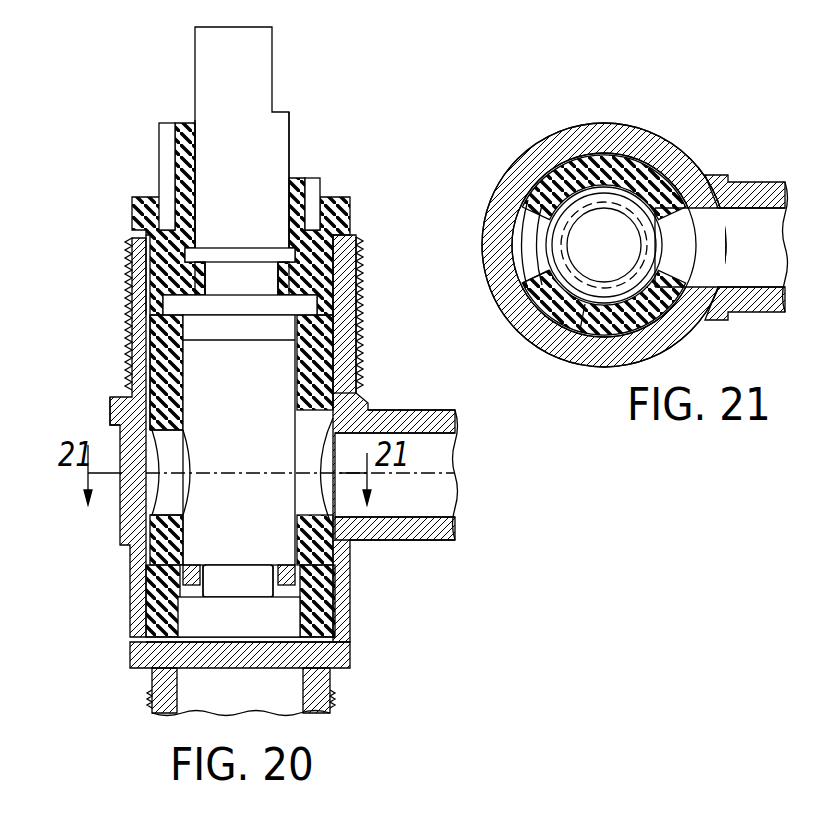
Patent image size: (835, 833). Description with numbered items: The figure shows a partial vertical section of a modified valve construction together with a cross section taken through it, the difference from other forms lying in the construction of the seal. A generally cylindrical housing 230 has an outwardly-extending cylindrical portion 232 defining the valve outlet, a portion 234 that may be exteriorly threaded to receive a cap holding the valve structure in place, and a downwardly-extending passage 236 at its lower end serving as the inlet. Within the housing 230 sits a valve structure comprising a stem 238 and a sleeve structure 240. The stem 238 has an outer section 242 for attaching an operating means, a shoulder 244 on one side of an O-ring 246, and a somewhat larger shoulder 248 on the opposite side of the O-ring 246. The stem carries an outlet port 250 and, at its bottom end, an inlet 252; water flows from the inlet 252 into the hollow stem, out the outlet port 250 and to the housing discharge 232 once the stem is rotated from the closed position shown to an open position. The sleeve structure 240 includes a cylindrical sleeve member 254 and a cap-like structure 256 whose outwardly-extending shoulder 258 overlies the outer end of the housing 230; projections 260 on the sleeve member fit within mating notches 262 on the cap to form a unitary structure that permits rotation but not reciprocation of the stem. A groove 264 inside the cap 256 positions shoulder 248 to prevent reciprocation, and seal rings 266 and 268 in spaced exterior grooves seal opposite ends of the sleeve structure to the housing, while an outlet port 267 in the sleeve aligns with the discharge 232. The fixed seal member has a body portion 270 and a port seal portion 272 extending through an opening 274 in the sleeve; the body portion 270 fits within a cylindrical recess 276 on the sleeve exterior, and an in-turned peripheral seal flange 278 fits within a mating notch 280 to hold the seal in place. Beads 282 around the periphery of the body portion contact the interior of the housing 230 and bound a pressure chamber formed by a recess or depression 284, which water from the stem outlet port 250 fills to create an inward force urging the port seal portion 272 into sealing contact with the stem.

In FIG. 20, the housing 230 is at (128, 650).
In FIG. 21, the housing 230 is at (590, 128).
In FIG. 20, the cylindrical portion 232 is at (440, 542).
In FIG. 21, the cylindrical portion 232 is at (775, 172).
In FIG. 20, the exteriorly threaded portion 234 is at (345, 300).
In FIG. 20, the downwardly-extending passage 236 is at (200, 700).
In FIG. 20, the stem 238 is at (283, 140).
In FIG. 20, the sleeve structure 240 is at (322, 565).
In FIG. 21, the sleeve structure 240 is at (628, 148).
In FIG. 20, the outer section 242 is at (270, 60).
In FIG. 20, the shoulder 244 is at (263, 230).
In FIG. 20, the O-ring 246 is at (196, 272).
In FIG. 20, the larger shoulder 248 is at (320, 280).
In FIG. 20, the stem outlet port 250 is at (185, 462).
In FIG. 21, the stem outlet port 250 is at (658, 252).
In FIG. 20, the inlet 252 is at (223, 600).
In FIG. 21, the inlet 252 is at (640, 240).
In FIG. 20, the sleeve member 254 is at (352, 390).
In FIG. 20, the cap-like structure 256 is at (343, 240).
In FIG. 20, the outwardly-extending shoulder 258 is at (138, 207).
In FIG. 20, the projections 260 is at (345, 330).
In FIG. 20, the mating notches 262 is at (150, 325).
In FIG. 20, the groove 264 is at (152, 300).
In FIG. 20, the seal ring 266 is at (142, 262).
In FIG. 20, the outlet port 267 is at (345, 522).
In FIG. 21, the outlet port 267 is at (688, 225).
In FIG. 20, the seal ring 268 is at (135, 612).
In FIG. 20, the body portion 270 is at (150, 530).
In FIG. 21, the body portion 270 is at (580, 330).
In FIG. 20, the port seal portion 272 is at (185, 500).
In FIG. 21, the port seal portion 272 is at (540, 185).
In FIG. 20, the opening 274 is at (168, 420).
In FIG. 20, the cylindrical recess 276 is at (170, 545).
In FIG. 20, the in-turned peripheral seal flange 278 is at (172, 565).
In FIG. 20, the mating notch 280 is at (165, 355).
In FIG. 20, the beads 282 is at (140, 560).
In FIG. 21, the beads 282 is at (530, 335).
In FIG. 20, the recess or depression 284 is at (115, 410).
In FIG. 21, the recess or depression 284 is at (510, 222).